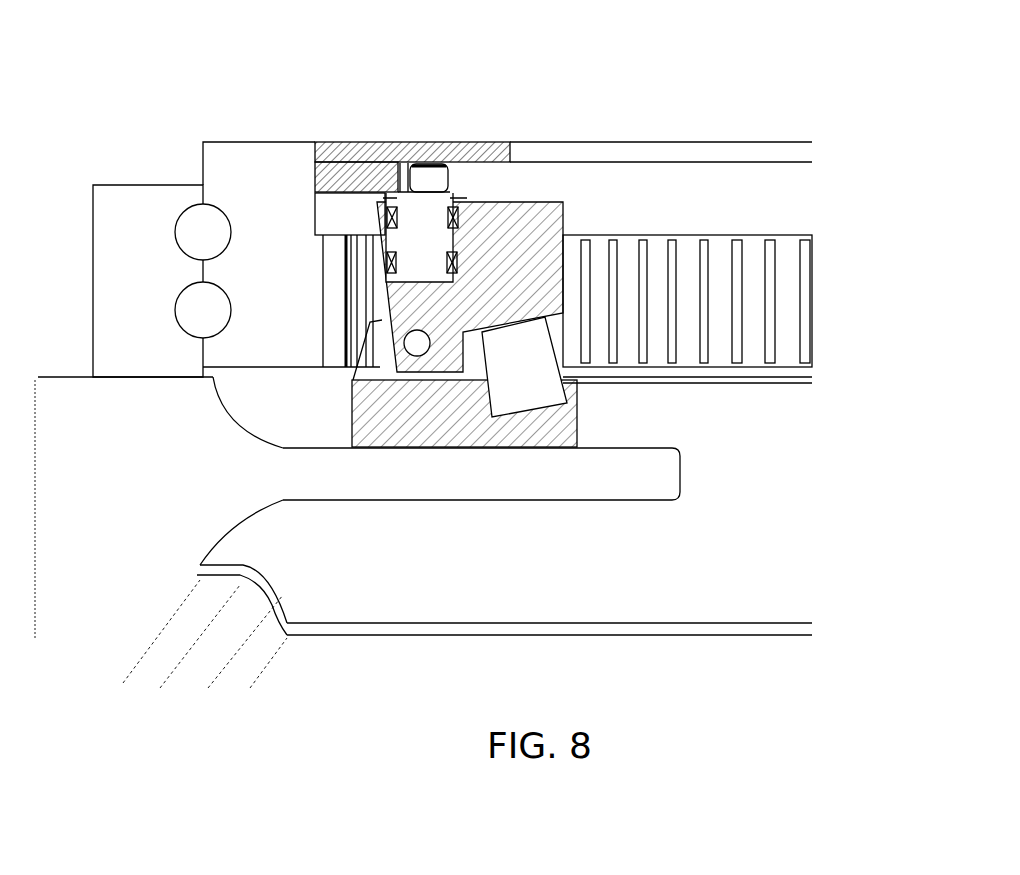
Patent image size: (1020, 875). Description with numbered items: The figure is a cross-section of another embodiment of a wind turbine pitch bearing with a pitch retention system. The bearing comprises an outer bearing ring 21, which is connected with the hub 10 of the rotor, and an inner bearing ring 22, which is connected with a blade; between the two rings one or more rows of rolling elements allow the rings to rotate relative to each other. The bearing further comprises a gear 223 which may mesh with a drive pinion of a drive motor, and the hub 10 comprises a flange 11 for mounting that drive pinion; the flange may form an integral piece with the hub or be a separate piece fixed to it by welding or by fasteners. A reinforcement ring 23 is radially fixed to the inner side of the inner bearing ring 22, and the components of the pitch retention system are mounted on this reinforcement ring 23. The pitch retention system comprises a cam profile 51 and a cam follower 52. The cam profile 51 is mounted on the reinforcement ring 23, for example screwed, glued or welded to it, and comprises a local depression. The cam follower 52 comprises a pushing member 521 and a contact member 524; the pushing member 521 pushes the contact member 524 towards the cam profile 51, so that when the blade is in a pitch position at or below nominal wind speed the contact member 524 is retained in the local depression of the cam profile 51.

The hub 10 is at (93, 405).
The flange 11 is at (457, 485).
The outer bearing ring 21 is at (116, 225).
The inner bearing ring 22 is at (265, 163).
The reinforcement ring 23 is at (385, 152).
The cam profile 51 is at (348, 185).
The cam follower 52 is at (573, 191).
The pushing member 521 is at (517, 385).
The contact member 524 is at (432, 173).
The gear 223 is at (723, 345).